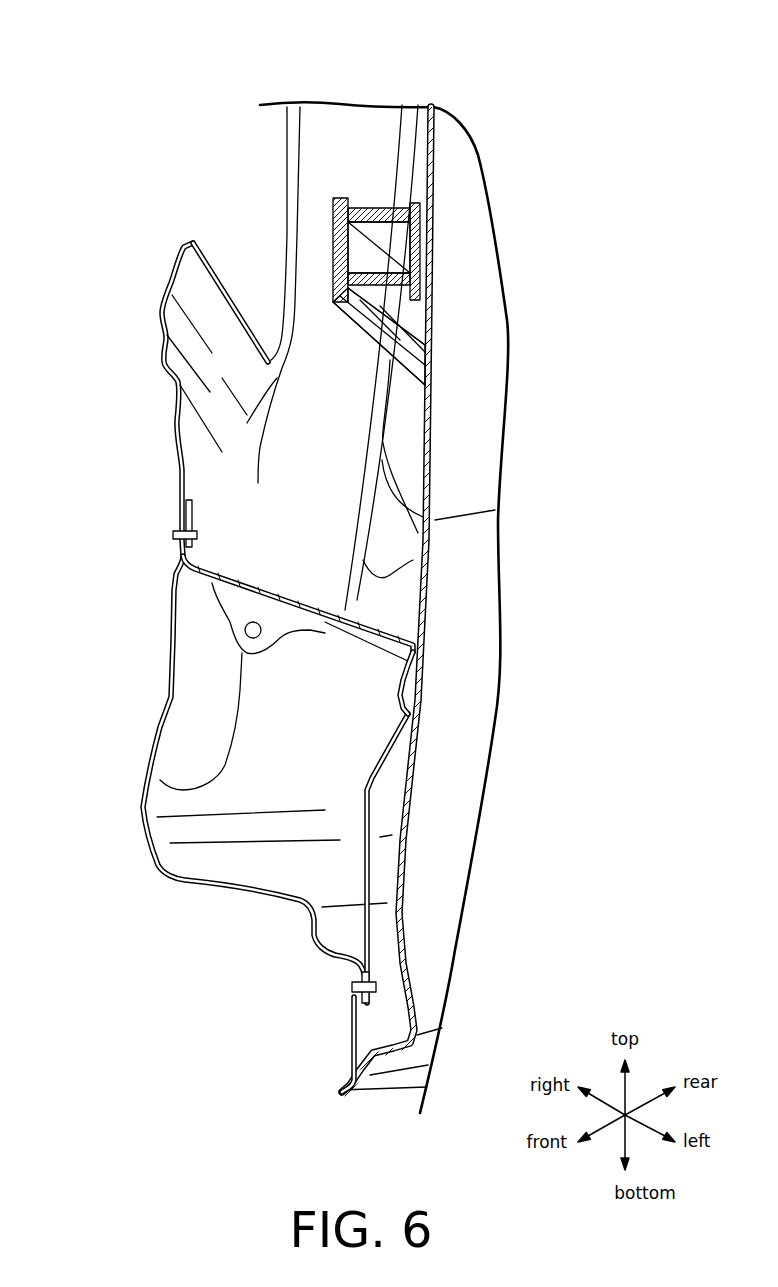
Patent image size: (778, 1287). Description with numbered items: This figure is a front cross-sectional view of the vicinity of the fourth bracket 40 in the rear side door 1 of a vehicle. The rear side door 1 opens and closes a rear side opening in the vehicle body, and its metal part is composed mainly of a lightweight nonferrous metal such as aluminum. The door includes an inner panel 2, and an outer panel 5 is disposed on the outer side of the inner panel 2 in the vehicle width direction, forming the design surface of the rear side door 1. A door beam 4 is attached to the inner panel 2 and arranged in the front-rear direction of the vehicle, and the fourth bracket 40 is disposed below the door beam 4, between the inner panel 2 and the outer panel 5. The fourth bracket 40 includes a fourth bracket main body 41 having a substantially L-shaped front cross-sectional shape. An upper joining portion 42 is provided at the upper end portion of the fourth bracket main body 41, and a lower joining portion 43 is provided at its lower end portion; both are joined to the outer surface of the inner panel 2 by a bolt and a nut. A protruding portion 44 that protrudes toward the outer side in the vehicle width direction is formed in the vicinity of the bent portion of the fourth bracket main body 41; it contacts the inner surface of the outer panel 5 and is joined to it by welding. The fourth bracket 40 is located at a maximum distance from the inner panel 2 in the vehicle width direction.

The rear side door 1 is at (544, 116).
The inner panel 2 is at (180, 473).
The door beam 4 is at (380, 283).
The outer panel 5 is at (455, 840).
The fourth bracket 40 is at (377, 622).
The fourth bracket main body 41 is at (325, 622).
The upper joining portion 42 is at (190, 507).
The lower joining portion 43 is at (360, 980).
The protruding portion 44 is at (405, 690).